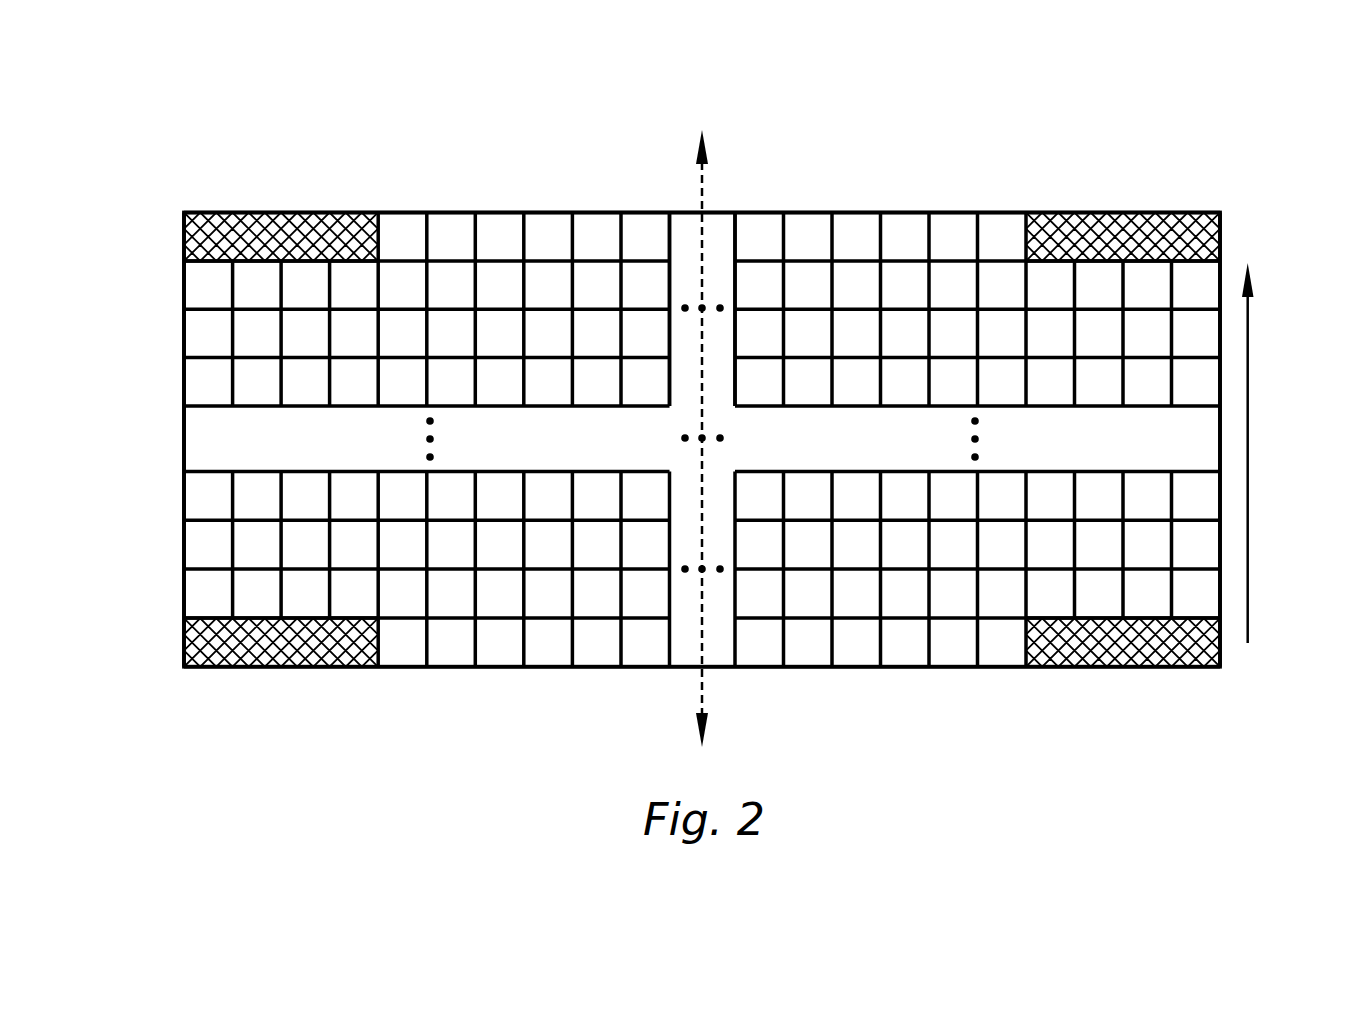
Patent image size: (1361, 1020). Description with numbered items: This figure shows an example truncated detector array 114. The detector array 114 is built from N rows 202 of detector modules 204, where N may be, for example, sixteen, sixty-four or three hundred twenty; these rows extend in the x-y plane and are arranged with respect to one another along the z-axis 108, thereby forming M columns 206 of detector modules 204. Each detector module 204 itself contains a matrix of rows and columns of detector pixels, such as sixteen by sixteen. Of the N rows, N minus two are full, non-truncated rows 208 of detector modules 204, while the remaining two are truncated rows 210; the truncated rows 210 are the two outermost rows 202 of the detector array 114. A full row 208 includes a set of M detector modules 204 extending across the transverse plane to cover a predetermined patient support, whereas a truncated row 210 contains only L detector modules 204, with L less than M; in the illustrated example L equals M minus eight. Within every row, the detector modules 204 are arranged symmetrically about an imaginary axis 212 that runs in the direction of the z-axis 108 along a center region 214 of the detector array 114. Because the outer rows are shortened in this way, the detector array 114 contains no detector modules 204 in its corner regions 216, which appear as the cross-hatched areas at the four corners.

The detector array 114 is at (150, 147).
The z-axis 108 is at (1248, 528).
The rows 202 is at (112, 700).
The detector modules 204 is at (402, 648).
The columns 206 is at (217, 200).
The full rows 208 is at (170, 262).
The truncated rows 210 is at (183, 240).
The imaginary axis 212 is at (705, 182).
The center region 214 is at (682, 202).
The corner regions 216 is at (355, 222).